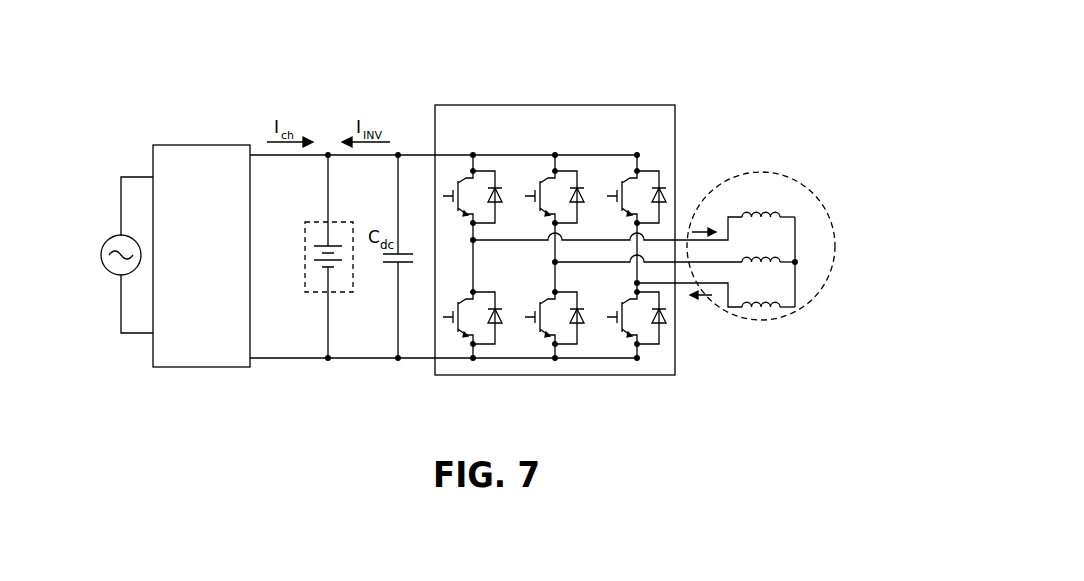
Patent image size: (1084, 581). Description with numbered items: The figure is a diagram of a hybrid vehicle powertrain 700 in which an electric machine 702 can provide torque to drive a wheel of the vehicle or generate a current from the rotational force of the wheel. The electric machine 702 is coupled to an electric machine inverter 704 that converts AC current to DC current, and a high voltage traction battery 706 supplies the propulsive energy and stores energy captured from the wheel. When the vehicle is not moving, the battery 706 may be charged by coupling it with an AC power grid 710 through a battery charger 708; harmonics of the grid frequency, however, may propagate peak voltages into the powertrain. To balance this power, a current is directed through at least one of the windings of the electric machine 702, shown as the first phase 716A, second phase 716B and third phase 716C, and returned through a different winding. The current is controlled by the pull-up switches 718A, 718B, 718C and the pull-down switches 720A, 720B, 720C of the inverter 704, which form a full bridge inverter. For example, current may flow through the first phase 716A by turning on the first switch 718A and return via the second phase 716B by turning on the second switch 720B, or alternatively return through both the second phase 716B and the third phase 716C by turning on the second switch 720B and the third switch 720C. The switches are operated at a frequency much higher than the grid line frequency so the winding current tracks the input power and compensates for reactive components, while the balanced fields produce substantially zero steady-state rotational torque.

The hybrid vehicle powertrain 700 is at (722, 40).
The electric machine 702 is at (815, 195).
The electric machine inverter 704 is at (570, 105).
The high voltage traction battery 706 is at (320, 222).
The battery charger 708 is at (230, 145).
The AC power grid 710 is at (108, 243).
The first phase winding 716A is at (741, 214).
The second phase winding 716B is at (770, 263).
The third phase winding 716C is at (768, 308).
The first pull-up switch 718A is at (464, 181).
The second pull-up switch 718B is at (546, 181).
The third pull-up switch 718C is at (628, 181).
The first pull-down switch 720A is at (468, 334).
The second pull-down switch 720B is at (548, 334).
The third pull-down switch 720C is at (630, 334).